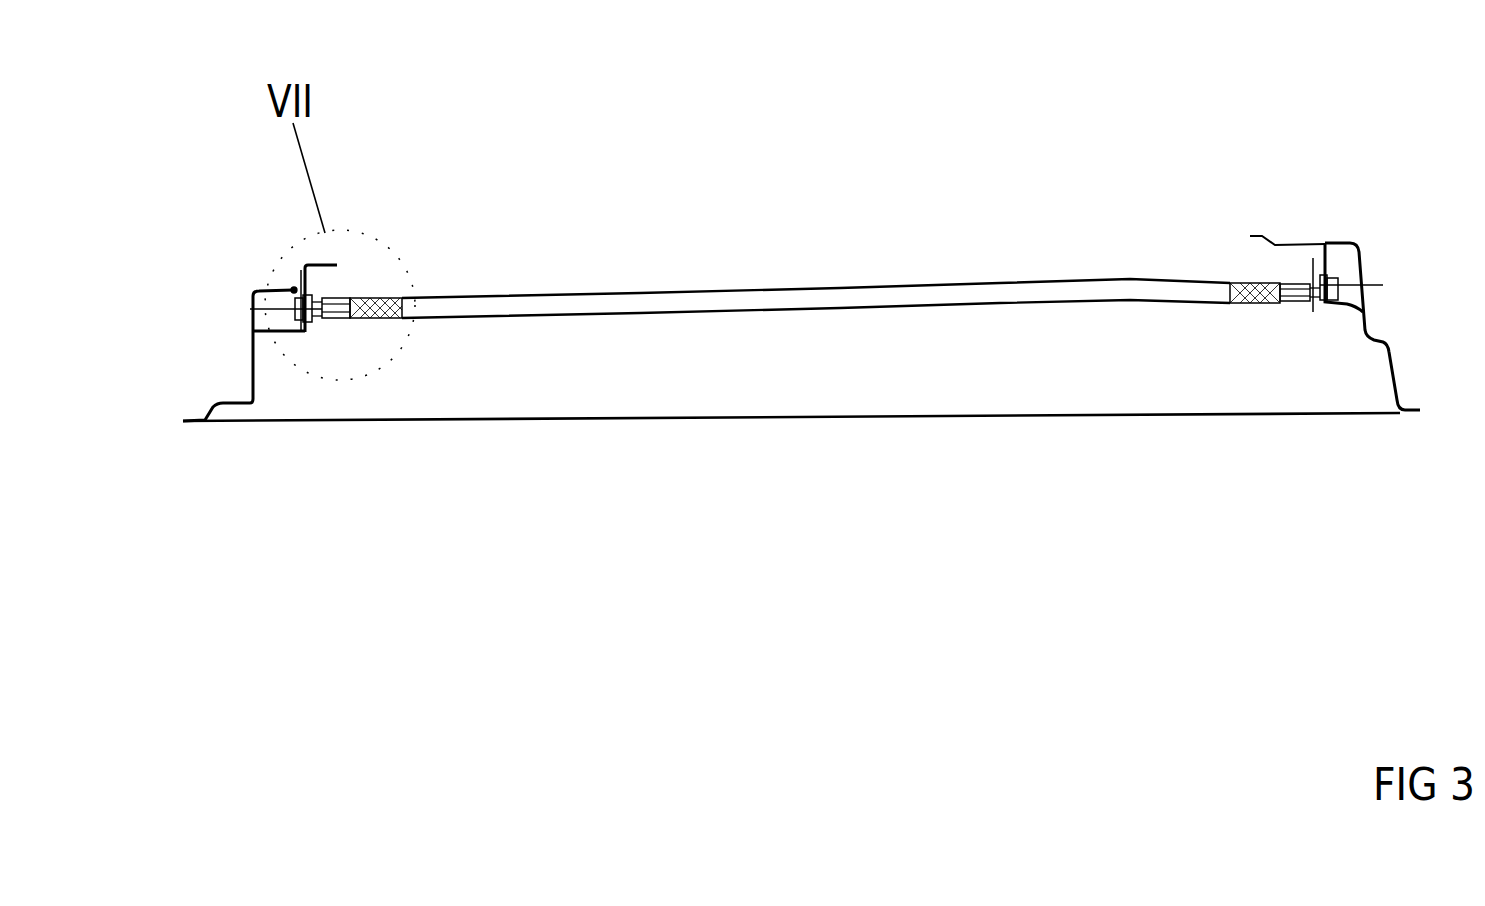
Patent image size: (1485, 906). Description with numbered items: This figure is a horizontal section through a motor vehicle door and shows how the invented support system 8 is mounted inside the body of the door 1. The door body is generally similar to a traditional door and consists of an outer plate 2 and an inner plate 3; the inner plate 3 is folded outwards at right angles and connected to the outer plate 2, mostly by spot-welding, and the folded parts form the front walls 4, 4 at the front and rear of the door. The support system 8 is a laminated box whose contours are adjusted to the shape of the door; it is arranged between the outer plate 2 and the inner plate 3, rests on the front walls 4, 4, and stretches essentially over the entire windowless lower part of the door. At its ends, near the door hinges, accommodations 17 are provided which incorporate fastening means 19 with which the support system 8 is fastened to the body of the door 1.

The body of the door 1 is at (1382, 225).
The outer plate 2 is at (678, 422).
The inner plate 3 is at (312, 270).
The front walls 4 is at (230, 403).
The support system 8 is at (680, 246).
The accommodations 17 is at (350, 322).
The fastening means 19 is at (816, 449).